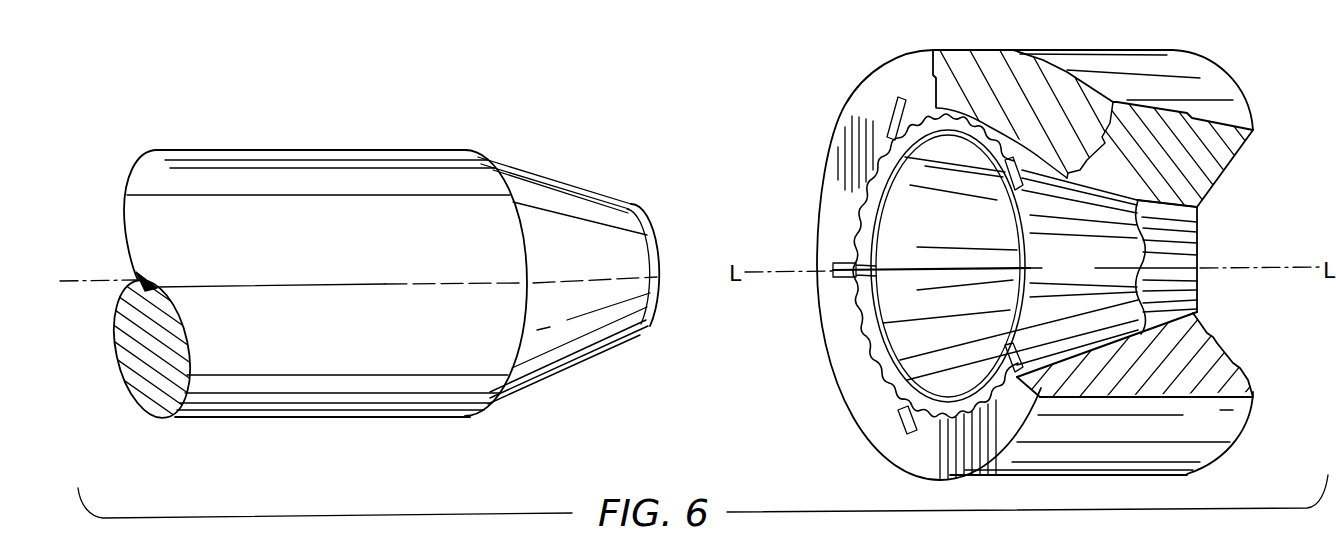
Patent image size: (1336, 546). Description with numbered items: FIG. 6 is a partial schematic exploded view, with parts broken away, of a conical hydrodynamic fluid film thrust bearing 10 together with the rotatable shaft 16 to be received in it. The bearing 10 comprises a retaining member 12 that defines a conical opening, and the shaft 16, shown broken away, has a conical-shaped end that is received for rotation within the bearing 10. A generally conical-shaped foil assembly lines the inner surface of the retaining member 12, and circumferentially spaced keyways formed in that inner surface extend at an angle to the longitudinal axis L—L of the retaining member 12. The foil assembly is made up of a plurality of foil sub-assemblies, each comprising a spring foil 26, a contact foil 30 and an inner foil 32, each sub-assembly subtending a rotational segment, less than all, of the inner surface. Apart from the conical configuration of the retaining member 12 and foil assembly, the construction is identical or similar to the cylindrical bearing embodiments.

The rotatable shaft 16 is at (322, 182).
The conical hydrodynamic fluid film bearing 10 is at (874, 82).
The retaining member 12 is at (1160, 86).
The spring foil 26 is at (1177, 232).
The contact foil 30 is at (1082, 278).
The inner foil 32 is at (947, 232).